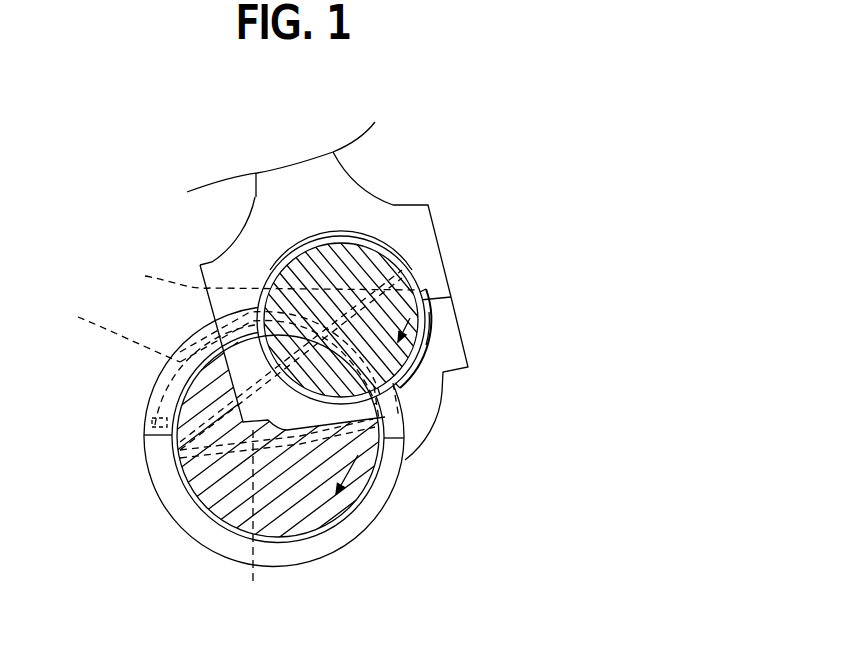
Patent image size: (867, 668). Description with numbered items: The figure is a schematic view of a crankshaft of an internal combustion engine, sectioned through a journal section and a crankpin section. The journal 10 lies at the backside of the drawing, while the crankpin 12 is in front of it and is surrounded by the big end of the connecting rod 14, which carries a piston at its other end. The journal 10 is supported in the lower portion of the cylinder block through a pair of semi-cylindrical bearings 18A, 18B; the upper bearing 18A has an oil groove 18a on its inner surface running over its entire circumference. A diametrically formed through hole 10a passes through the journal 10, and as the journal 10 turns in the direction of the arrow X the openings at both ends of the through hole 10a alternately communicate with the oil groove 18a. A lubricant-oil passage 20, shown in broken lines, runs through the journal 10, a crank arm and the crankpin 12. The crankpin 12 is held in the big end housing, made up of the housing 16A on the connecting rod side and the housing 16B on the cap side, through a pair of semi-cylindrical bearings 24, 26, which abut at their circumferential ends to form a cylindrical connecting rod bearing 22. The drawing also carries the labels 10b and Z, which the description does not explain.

The journal 10 is at (210, 516).
The through hole 10a is at (250, 525).
The outer surface of first pipe 10b is at (278, 436).
The crankpin 12 is at (356, 263).
The connecting rod 14 is at (255, 197).
The big end housing on the connecting rod side 16A is at (442, 260).
The big end housing on the cap side 16B is at (460, 323).
The semi-cylindrical bearing 18A is at (150, 389).
The semi-cylindrical bearing 18B is at (156, 483).
The oil groove 18a is at (150, 421).
The lubricant-oil passage 20 is at (232, 360).
The connecting rod bearing 22 is at (426, 333).
The semi-cylindrical bearing 24 is at (402, 385).
The semi-cylindrical bearing 26 is at (333, 238).
The direction of rotation arrow X is at (350, 481).
The direction Z is at (410, 335).